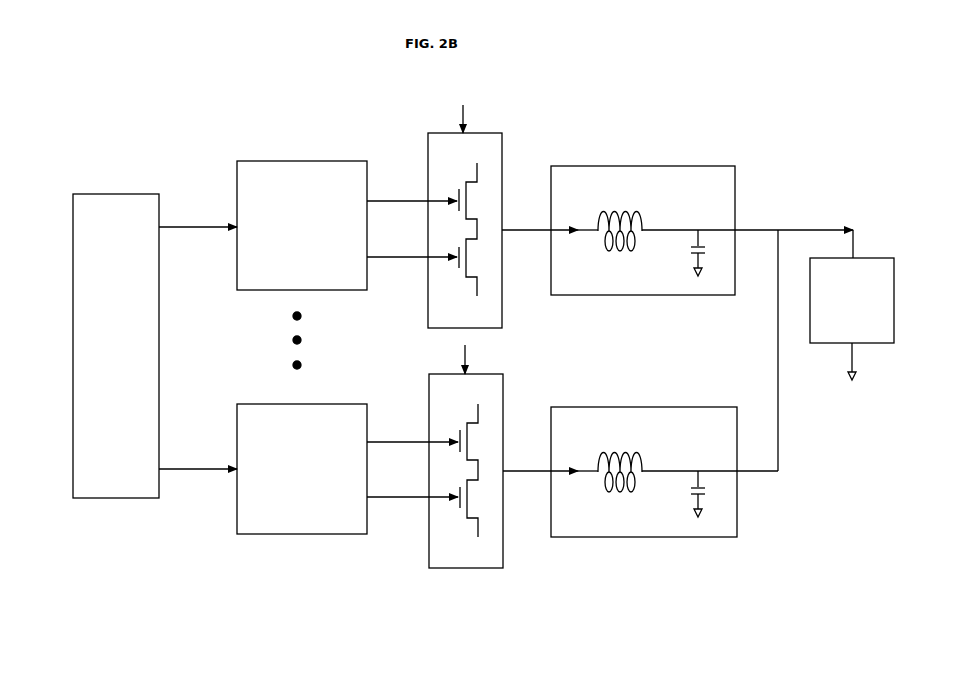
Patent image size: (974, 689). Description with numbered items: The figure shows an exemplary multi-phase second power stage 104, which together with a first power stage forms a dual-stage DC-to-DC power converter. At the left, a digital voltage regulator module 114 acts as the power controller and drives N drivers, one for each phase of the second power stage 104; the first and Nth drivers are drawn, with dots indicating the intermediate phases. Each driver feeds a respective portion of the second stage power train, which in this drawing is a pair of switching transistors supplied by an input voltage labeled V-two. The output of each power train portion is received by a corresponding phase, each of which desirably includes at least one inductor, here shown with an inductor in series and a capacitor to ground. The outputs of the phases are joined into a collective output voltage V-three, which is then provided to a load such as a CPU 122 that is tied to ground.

The second power stage 104 is at (497, 68).
The voltage regulator module 114 is at (120, 194).
The CPU 122 is at (895, 299).